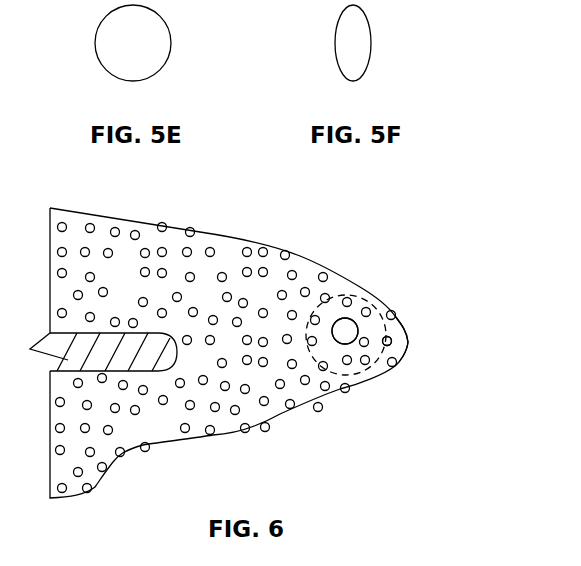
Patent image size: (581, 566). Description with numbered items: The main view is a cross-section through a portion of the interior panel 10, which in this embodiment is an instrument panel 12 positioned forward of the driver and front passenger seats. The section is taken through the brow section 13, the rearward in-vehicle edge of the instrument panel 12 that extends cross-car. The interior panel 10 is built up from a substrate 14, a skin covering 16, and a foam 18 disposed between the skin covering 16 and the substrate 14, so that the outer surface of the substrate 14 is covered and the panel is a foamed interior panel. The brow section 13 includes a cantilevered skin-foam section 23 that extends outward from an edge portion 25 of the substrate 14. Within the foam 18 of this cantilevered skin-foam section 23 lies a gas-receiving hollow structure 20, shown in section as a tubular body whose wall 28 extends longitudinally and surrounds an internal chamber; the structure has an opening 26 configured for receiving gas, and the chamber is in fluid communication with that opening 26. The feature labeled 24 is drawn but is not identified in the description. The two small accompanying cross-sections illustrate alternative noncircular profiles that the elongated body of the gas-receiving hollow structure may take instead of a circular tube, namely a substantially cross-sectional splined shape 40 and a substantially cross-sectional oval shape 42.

In FIG. 5E, the substantially cross-sectional splined shape 40 is at (172, 43).
In FIG. 6, the substantially cross-sectional splined shape 40 is at (330, 376).
In FIG. 5F, the substantially cross-sectional oval shape 42 is at (372, 43).
In FIG. 6, the interior panel 10 is at (458, 202).
In FIG. 6, the instrument panel 12 is at (485, 250).
In FIG. 6, the brow section 13 is at (358, 267).
In FIG. 6, the substrate 14 is at (141, 371).
In FIG. 6, the skin covering 16 is at (265, 252).
In FIG. 6, the foam 18 is at (200, 258).
In FIG. 6, the gas-receiving hollow structure 20 is at (357, 331).
In FIG. 6, the cantilevered skin-foam section 23 is at (292, 316).
In FIG. 6, the hatched insert 24 is at (148, 333).
In FIG. 6, the edge portion 25 is at (177, 338).
In FIG. 6, the opening 26 is at (352, 340).
In FIG. 6, the wall 28 is at (356, 316).